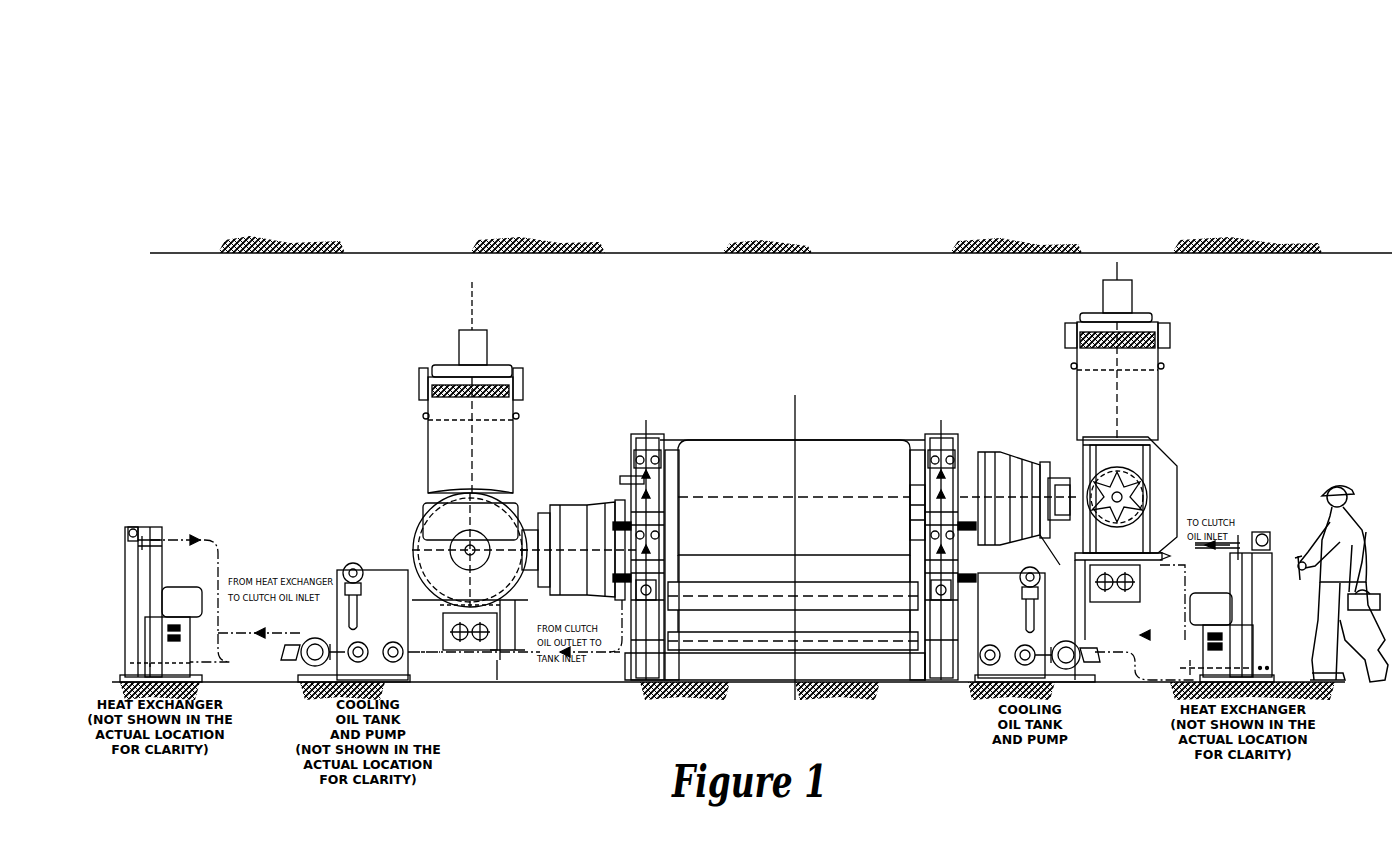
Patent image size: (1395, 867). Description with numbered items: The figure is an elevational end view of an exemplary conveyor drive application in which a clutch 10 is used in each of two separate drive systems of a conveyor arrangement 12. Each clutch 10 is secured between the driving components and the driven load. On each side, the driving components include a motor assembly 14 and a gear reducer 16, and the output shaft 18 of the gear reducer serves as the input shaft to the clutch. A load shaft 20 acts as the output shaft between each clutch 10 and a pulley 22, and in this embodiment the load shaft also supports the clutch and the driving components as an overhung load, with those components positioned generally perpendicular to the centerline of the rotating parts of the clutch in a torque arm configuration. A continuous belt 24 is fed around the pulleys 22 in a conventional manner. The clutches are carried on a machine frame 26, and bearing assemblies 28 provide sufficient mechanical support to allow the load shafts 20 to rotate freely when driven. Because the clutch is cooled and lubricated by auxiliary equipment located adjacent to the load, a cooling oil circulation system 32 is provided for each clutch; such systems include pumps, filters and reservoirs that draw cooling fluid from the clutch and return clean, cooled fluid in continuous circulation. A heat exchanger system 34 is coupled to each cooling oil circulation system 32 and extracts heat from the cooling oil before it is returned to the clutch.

The clutch 10 is at (592, 466).
The conveyor arrangement 12 is at (262, 408).
The motor assembly 14 is at (500, 368).
The gear reducer 16 is at (430, 528).
The output shaft 18 is at (522, 545).
The load shaft 20 is at (690, 440).
The pulley 22 is at (907, 440).
The continuous belt 24 is at (742, 440).
The machine frame 26 is at (632, 440).
The bearing assembly 28 is at (637, 482).
The cooling oil circulation system 32 is at (330, 555).
The heat exchanger system 34 is at (173, 567).